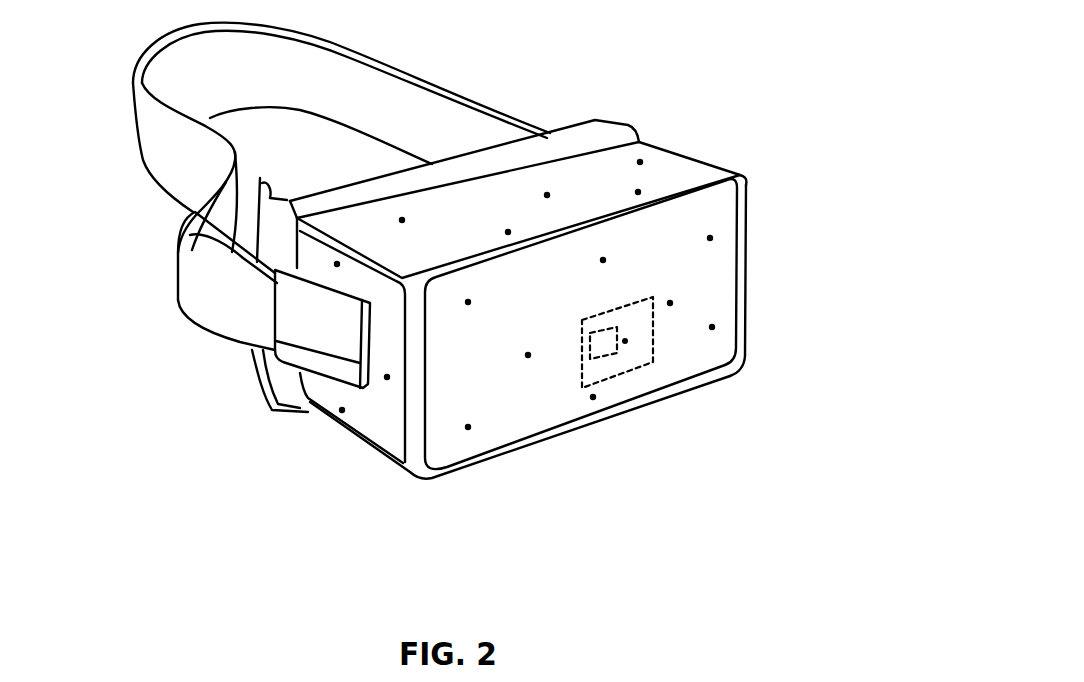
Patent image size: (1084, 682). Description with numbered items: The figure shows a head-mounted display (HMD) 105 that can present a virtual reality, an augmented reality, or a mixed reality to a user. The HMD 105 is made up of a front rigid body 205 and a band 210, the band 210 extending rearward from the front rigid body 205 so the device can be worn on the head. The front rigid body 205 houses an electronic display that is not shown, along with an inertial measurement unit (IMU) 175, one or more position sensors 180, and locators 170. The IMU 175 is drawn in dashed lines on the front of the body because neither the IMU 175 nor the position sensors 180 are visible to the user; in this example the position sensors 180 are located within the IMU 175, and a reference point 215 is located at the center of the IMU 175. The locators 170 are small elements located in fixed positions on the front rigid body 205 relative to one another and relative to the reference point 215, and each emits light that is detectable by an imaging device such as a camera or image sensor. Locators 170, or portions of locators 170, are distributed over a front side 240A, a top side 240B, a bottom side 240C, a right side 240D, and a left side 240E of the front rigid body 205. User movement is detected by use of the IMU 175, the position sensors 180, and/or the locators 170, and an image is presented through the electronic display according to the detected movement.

The head-mounted display 105 is at (47, 40).
The band 210 is at (447, 90).
The front rigid body 205 is at (742, 170).
The front side 240A is at (457, 447).
The top side 240B is at (380, 221).
The bottom side 240C is at (340, 447).
The right side 240D is at (380, 408).
The left side 240E is at (712, 162).
The locators 170 is at (716, 324).
The inertial measurement unit 175 is at (647, 342).
The position sensors 180 is at (603, 350).
The reference point 215 is at (623, 343).